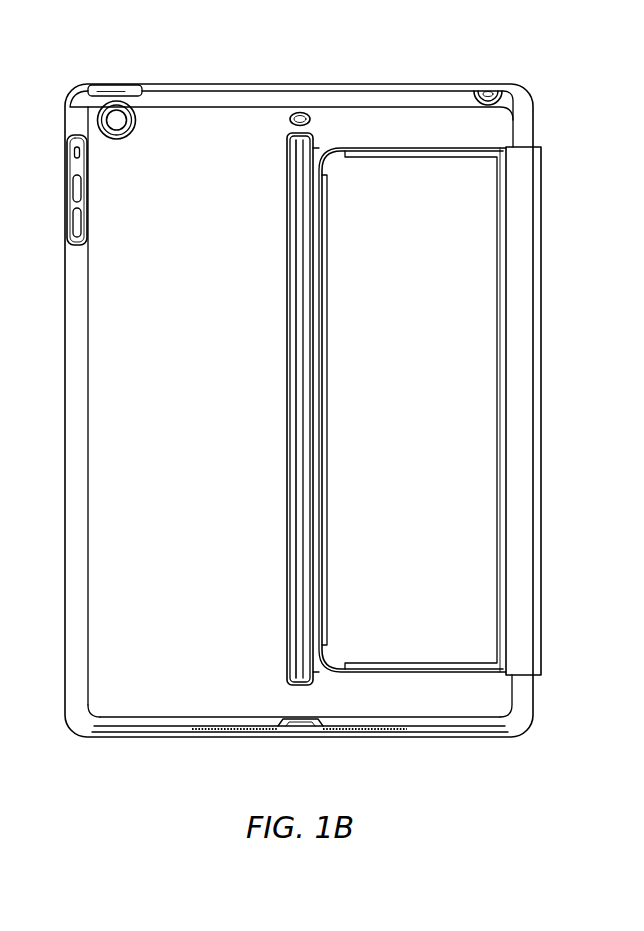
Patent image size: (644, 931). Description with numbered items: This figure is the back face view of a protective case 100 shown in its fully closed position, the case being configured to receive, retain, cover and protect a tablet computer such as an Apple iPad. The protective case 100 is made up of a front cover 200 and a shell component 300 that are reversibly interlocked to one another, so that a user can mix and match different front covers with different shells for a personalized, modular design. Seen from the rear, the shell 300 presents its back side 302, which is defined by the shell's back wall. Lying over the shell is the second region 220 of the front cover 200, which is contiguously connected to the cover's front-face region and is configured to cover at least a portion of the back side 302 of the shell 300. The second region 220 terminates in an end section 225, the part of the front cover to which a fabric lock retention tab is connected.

The protective case 100 is at (402, 85).
The front cover 200 is at (542, 233).
The second region 220 is at (447, 277).
The end section 225 is at (285, 208).
The shell component 300 is at (528, 726).
The back side 302 is at (413, 695).